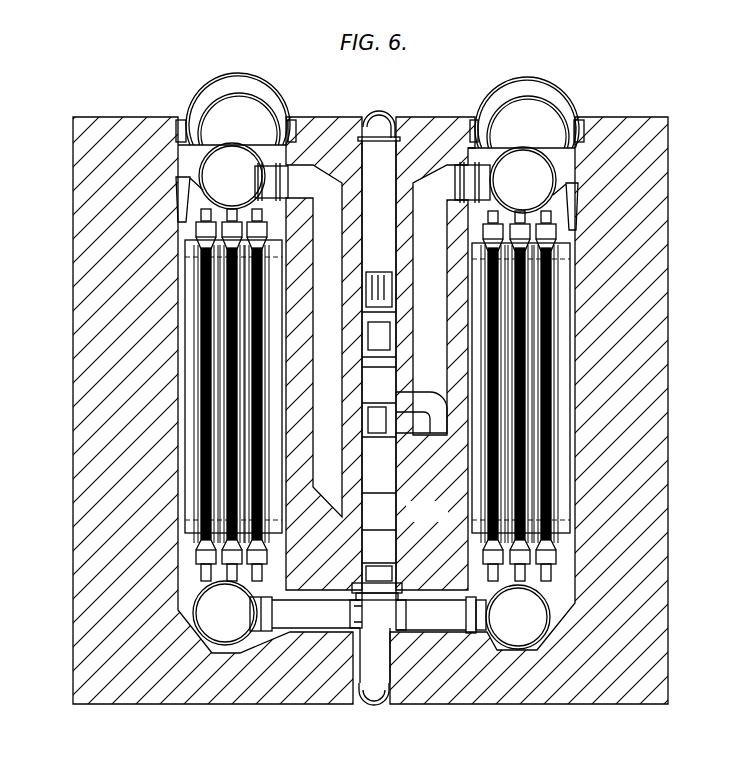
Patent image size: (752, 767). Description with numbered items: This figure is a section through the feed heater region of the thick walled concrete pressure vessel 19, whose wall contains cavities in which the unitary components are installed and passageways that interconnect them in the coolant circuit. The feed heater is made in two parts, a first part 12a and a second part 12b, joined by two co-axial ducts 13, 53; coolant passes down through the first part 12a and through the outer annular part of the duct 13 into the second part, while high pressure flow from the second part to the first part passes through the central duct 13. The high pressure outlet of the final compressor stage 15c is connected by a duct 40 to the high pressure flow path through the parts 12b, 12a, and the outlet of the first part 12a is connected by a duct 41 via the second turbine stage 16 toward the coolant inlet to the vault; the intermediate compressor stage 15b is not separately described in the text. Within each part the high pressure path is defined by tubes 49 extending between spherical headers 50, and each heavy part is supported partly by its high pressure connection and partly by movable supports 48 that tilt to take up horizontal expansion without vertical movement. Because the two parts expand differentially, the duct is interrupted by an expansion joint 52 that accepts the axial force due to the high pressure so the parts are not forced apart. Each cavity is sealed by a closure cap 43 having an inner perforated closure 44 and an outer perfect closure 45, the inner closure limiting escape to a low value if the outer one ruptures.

The first part of the feed heater 12a is at (577, 465).
The second part of the feed heater 12b is at (178, 404).
The co-axial duct 13 is at (440, 632).
The lower conduit section 15b is at (381, 550).
The final compressor stage 15c is at (380, 512).
The second turbine stage 16 is at (412, 392).
The concrete pressure vessel 19 is at (377, 410).
The duct 40 is at (340, 395).
The duct 41 is at (440, 312).
The closure cap 43 is at (386, 393).
The inner perforated closure 44 is at (210, 100).
The outer perfect closure 45 is at (270, 94).
The movable supports 48 is at (578, 205).
The tubes 49 is at (203, 300).
The spherical headers 50 is at (232, 172).
The expansion joint 52 is at (382, 613).
The co-axial duct 53 is at (308, 628).